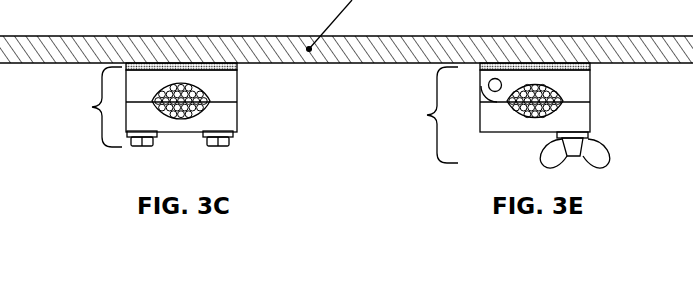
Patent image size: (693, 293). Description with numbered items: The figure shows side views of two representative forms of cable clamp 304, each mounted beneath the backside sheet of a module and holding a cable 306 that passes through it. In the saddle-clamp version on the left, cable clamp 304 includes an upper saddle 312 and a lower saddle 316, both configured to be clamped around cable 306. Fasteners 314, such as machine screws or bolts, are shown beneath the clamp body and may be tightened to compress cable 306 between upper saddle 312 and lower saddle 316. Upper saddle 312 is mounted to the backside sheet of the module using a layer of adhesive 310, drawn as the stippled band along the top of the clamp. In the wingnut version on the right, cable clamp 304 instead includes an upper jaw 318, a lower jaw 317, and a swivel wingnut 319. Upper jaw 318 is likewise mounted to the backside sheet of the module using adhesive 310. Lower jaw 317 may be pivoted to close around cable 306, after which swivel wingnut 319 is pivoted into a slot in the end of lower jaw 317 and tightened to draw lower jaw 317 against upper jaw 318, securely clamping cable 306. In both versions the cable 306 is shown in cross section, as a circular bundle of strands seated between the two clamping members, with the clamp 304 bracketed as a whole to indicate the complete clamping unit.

In FIG. 3C, the cable clamp 304 is at (87, 107).
In FIG. 3E, the cable clamp 304 is at (423, 115).
In FIG. 3C, the cable 306 is at (181, 101).
In FIG. 3E, the cable 306 is at (535, 101).
In FIG. 3C, the adhesive 310 is at (237, 67).
In FIG. 3E, the adhesive 310 is at (591, 67).
In FIG. 3C, the upper saddle 312 is at (212, 92).
In FIG. 3C, the fasteners 314 is at (220, 141).
In FIG. 3C, the lower saddle 316 is at (213, 121).
In FIG. 3E, the lower jaw 317 is at (566, 90).
In FIG. 3E, the upper jaw 318 is at (567, 120).
In FIG. 3E, the swivel wingnut 319 is at (575, 144).